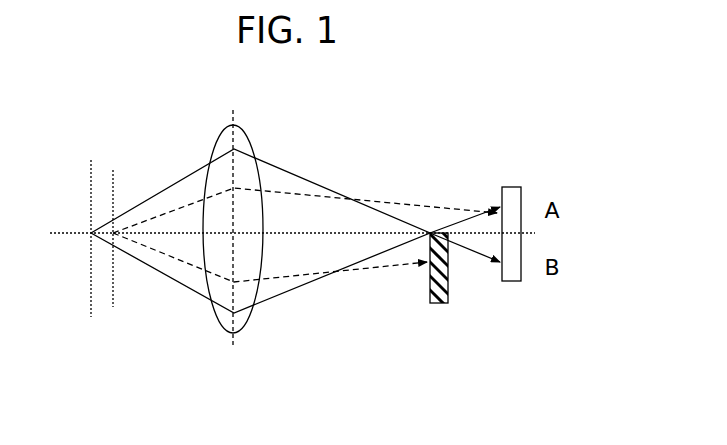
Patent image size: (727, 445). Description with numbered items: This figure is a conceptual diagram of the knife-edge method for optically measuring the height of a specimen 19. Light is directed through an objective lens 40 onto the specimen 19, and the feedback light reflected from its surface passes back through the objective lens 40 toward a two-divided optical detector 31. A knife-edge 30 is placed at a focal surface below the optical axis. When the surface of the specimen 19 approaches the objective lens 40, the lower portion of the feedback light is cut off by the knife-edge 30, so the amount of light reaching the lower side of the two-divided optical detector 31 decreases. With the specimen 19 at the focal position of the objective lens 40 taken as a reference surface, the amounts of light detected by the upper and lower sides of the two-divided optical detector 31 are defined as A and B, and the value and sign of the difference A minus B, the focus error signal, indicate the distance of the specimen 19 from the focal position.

The specimen 19 is at (98, 148).
The objective lens 40 is at (248, 146).
The knife-edge 30 is at (433, 305).
The two-divided optical detector 31 is at (523, 190).